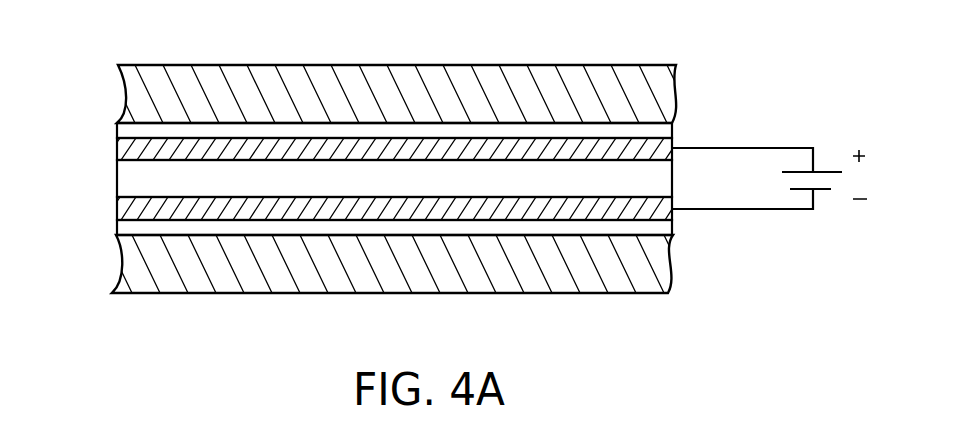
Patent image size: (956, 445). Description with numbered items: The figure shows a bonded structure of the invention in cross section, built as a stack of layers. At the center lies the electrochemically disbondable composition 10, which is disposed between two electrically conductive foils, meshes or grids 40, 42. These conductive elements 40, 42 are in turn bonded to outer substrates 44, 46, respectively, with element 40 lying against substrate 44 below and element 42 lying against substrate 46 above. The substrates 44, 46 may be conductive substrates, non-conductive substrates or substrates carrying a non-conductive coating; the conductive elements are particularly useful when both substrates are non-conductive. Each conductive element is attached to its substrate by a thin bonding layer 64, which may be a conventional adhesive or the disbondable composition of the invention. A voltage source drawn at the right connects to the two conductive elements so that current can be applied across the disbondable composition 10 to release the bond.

The electrochemically disbondable composition 10 is at (128, 177).
The electrically conductive foil, mesh or grid 40 is at (121, 208).
The electrically conductive foil, mesh or grid 42 is at (121, 148).
The substrate 44 is at (123, 270).
The substrate 46 is at (128, 97).
The disbondable composition bonding layer 64 is at (663, 130).